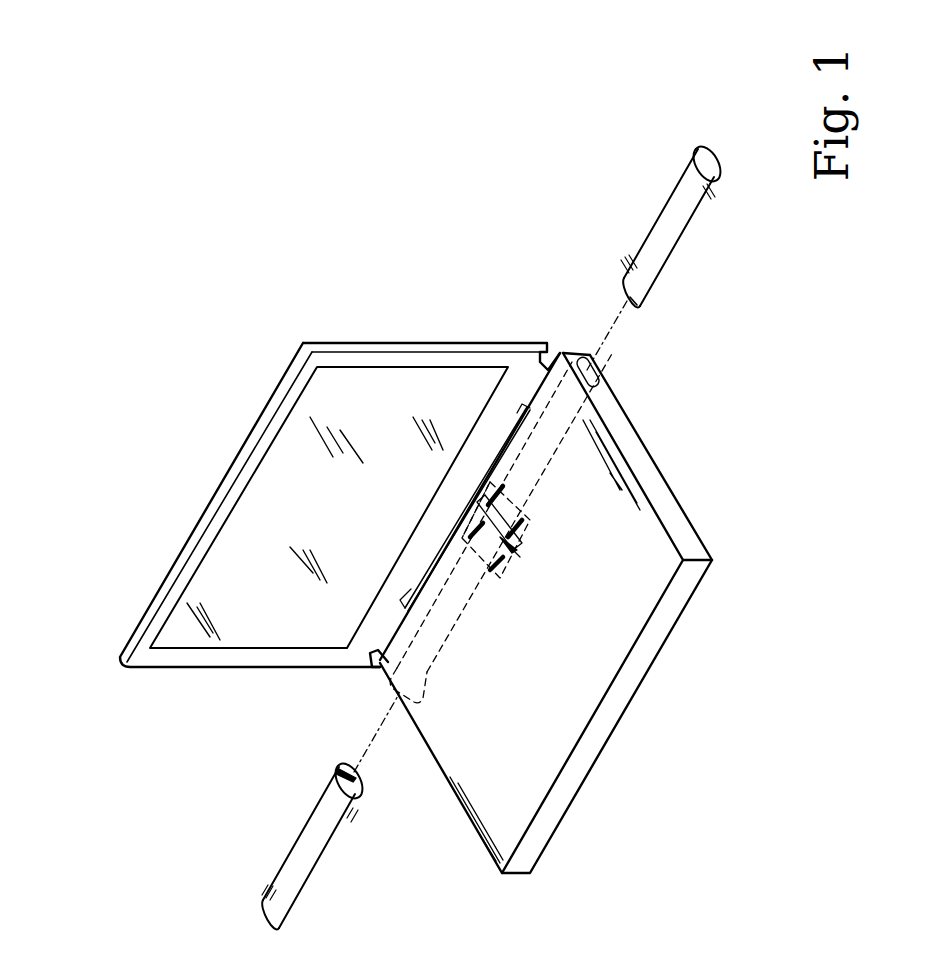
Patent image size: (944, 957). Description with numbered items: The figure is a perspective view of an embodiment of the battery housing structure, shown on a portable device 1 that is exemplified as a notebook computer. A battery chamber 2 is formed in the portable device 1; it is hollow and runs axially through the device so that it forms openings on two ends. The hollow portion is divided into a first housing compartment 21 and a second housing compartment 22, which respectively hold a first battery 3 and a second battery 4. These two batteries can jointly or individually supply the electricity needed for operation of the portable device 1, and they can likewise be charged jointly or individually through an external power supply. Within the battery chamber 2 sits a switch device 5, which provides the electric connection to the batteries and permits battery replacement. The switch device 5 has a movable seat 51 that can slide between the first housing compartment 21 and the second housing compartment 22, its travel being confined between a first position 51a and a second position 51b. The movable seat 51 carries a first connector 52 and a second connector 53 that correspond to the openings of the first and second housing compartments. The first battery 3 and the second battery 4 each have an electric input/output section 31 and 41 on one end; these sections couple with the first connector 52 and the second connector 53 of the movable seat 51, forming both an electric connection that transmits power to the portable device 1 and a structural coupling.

The portable device 1 is at (193, 379).
The battery chamber 2 is at (584, 357).
The first housing compartment 21 is at (560, 427).
The second housing compartment 22 is at (433, 640).
The first battery 3 is at (655, 211).
The electric input/output section 31 is at (633, 292).
The second battery 4 is at (302, 832).
The electric input/output section 41 is at (340, 758).
The switch device 5 is at (532, 560).
The movable seat 51 is at (473, 512).
The first position 51a is at (505, 582).
The second position 51b is at (523, 533).
The first connector 52 is at (480, 500).
The second connector 53 is at (470, 527).